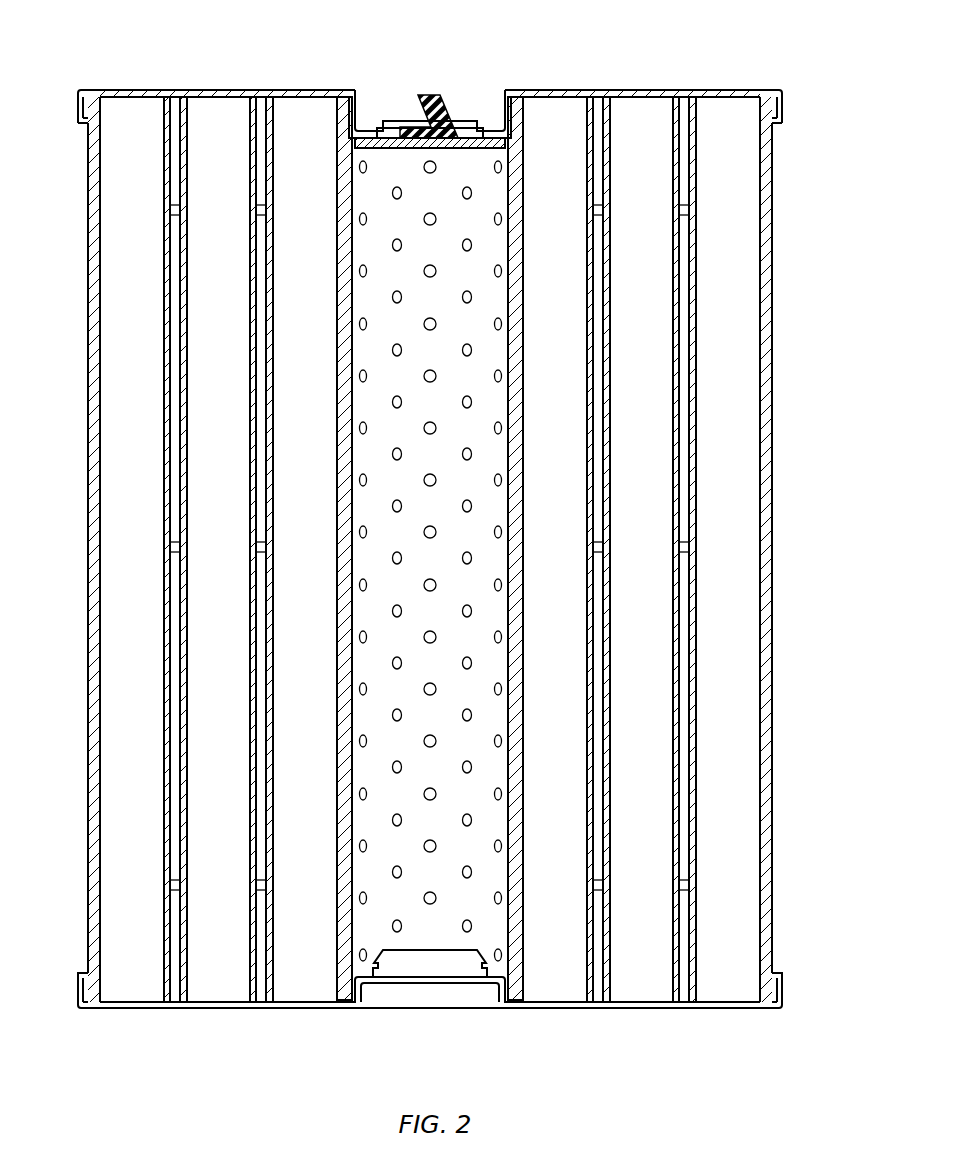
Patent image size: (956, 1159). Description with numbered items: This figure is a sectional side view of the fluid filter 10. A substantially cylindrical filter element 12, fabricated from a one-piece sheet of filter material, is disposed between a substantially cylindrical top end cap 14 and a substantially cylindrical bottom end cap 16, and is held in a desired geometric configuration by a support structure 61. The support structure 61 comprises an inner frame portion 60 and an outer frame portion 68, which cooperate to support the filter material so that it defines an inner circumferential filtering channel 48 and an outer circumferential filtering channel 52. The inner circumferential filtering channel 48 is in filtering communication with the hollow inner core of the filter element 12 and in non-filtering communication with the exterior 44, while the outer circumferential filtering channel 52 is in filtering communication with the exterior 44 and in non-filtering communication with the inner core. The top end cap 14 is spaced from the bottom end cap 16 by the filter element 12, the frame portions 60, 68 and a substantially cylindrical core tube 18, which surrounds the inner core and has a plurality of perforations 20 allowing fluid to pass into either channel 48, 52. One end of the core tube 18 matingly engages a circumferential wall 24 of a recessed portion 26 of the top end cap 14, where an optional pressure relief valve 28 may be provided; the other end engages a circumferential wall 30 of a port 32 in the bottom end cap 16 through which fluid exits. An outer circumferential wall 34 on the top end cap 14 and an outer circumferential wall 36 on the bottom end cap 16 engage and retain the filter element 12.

The fluid filter 10 is at (150, 60).
The filter element 12 is at (465, 546).
The top end cap 14 is at (640, 91).
The bottom end cap 16 is at (660, 1007).
The core tube 18 is at (343, 907).
The perforations 20 is at (470, 927).
The circumferential wall 24 is at (508, 128).
The recessed portion 26 is at (373, 72).
The pressure relief valve 28 is at (450, 127).
The circumferential wall 30 is at (356, 992).
The port 32 is at (455, 1012).
The outer circumferential wall 34 is at (783, 118).
The outer circumferential wall 36 is at (782, 990).
The exterior 44 is at (771, 290).
The inner circumferential filtering channel 48 is at (262, 982).
The outer circumferential filtering channel 52 is at (170, 978).
The inner frame portion 60 is at (258, 212).
The support structure 61 is at (160, 298).
The outer frame portion 68 is at (172, 209).